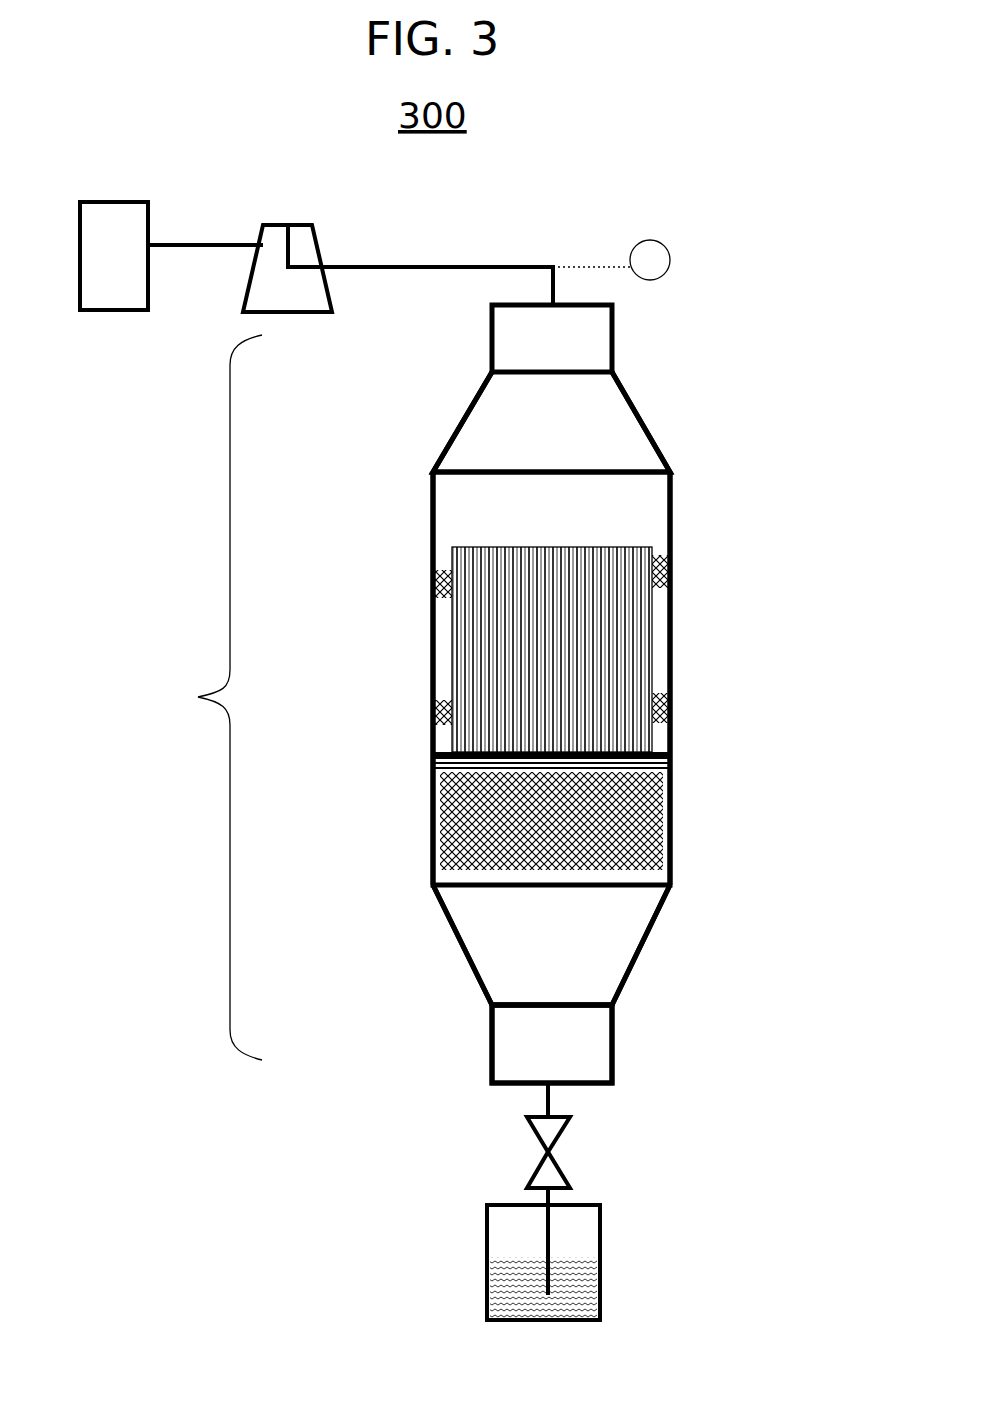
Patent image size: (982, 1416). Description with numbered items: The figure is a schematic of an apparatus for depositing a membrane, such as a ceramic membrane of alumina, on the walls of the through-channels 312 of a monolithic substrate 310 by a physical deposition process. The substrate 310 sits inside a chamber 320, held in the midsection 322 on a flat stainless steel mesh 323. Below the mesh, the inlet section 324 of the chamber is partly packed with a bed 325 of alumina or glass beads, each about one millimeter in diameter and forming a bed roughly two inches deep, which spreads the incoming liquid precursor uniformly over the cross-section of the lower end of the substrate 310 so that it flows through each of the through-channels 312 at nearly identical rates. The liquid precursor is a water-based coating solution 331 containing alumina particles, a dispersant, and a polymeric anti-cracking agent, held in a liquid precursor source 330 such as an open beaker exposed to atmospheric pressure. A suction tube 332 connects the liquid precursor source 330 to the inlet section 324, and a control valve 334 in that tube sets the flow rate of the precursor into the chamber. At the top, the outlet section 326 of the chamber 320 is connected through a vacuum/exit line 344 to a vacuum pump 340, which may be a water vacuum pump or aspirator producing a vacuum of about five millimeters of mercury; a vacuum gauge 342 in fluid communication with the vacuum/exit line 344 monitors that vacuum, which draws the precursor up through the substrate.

The substrate 310 is at (575, 612).
The through-channels 312 is at (588, 652).
The chamber 320 is at (397, 694).
The midsection 322 is at (433, 652).
The flat stainless steel mesh 323 is at (675, 765).
The inlet section 324 is at (495, 918).
The bed 325 is at (445, 845).
The outlet section 326 is at (455, 520).
The liquid precursor source 330 is at (480, 1310).
The coating solution 331 is at (577, 1290).
The suction tube 332 is at (540, 1103).
The control valve 334 is at (560, 1152).
The vacuum pump 340 is at (158, 218).
The vacuum gauge 342 is at (675, 258).
The vacuum/exit line 344 is at (445, 262).